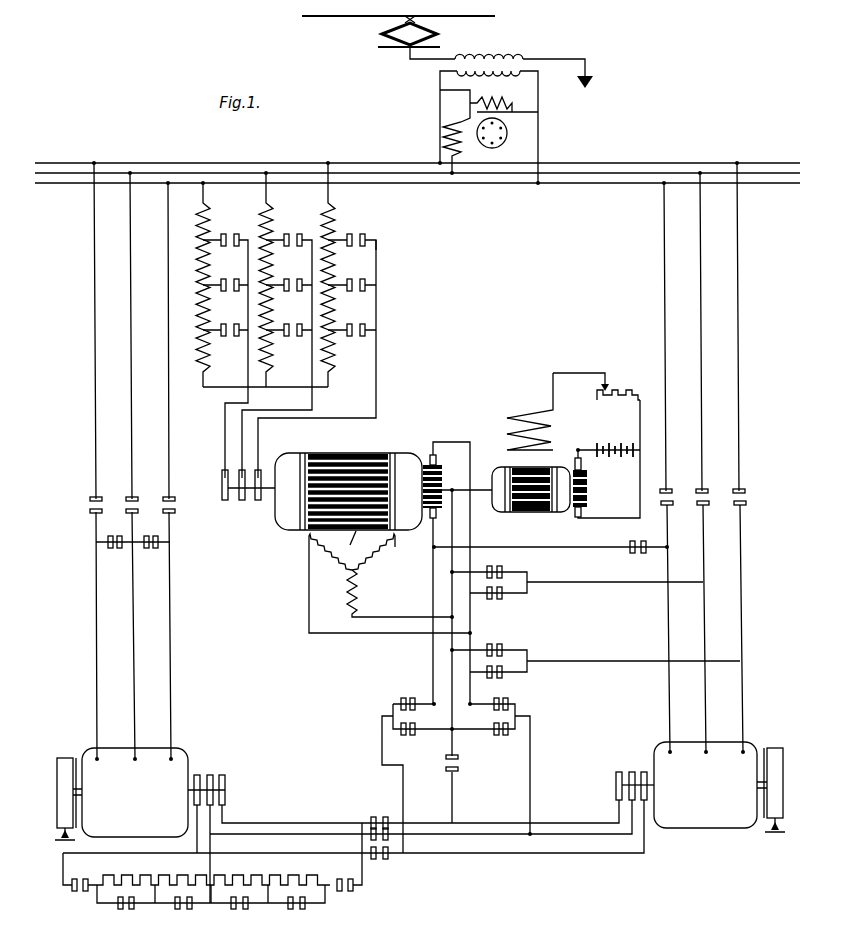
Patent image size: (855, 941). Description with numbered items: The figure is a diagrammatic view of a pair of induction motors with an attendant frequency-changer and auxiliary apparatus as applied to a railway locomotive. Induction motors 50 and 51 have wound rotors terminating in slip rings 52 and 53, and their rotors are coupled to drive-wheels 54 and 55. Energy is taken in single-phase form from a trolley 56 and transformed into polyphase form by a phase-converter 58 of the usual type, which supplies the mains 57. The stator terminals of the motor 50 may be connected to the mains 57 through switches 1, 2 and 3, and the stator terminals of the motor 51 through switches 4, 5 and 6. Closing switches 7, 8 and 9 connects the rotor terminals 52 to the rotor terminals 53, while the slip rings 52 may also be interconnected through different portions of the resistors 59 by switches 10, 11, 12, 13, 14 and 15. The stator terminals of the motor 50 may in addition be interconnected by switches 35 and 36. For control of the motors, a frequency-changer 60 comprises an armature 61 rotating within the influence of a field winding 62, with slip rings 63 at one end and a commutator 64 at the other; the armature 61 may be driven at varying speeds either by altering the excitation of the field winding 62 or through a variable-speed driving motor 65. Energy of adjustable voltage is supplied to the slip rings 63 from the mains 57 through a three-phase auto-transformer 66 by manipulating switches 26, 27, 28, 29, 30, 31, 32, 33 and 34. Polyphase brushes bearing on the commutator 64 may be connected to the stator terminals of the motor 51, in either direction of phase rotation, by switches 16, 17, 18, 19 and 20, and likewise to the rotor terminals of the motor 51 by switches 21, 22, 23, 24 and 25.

The switch 1 is at (102, 507).
The switch 2 is at (138, 507).
The switch 3 is at (175, 507).
The switch 4 is at (673, 498).
The switch 5 is at (709, 498).
The switch 6 is at (745, 498).
The switch 7 is at (377, 817).
The switch 8 is at (388, 835).
The switch 9 is at (381, 862).
The switch 10 is at (80, 896).
The switch 11 is at (343, 892).
The switch 12 is at (126, 914).
The switch 13 is at (296, 914).
The switch 14 is at (182, 914).
The switch 15 is at (239, 914).
The switch 16 is at (634, 541).
The switch 17 is at (500, 567).
The switch 18 is at (500, 598).
The switch 19 is at (501, 641).
The switch 20 is at (499, 681).
The switch 21 is at (459, 763).
The switch 22 is at (497, 709).
The switch 23 is at (498, 737).
The switch 24 is at (403, 696).
The switch 25 is at (405, 737).
The switch 26 is at (228, 236).
The switch 27 is at (229, 281).
The switch 28 is at (230, 326).
The switch 29 is at (292, 236).
The switch 30 is at (293, 281).
The switch 31 is at (293, 326).
The switch 32 is at (356, 236).
The switch 33 is at (356, 281).
The switch 34 is at (356, 326).
The switch 35 is at (112, 551).
The switch 36 is at (150, 551).
The induction motor 50 is at (185, 750).
The induction motor 51 is at (745, 744).
The slip rings 52 is at (210, 775).
The slip rings 53 is at (632, 772).
The drive-wheel 54 is at (57, 785).
The drive-wheel 55 is at (783, 762).
The trolley 56 is at (398, 37).
The mains 57 is at (571, 183).
The phase-converter 58 is at (516, 118).
The resistors 59 is at (283, 876).
The frequency-changer 60 is at (380, 449).
The armature 61 is at (350, 543).
The field winding 62 is at (389, 583).
The slip rings 63 is at (248, 496).
The commutator 64 is at (444, 486).
The variable-speed driving motor 65 is at (612, 499).
The three-phase auto-transformer 66 is at (389, 254).